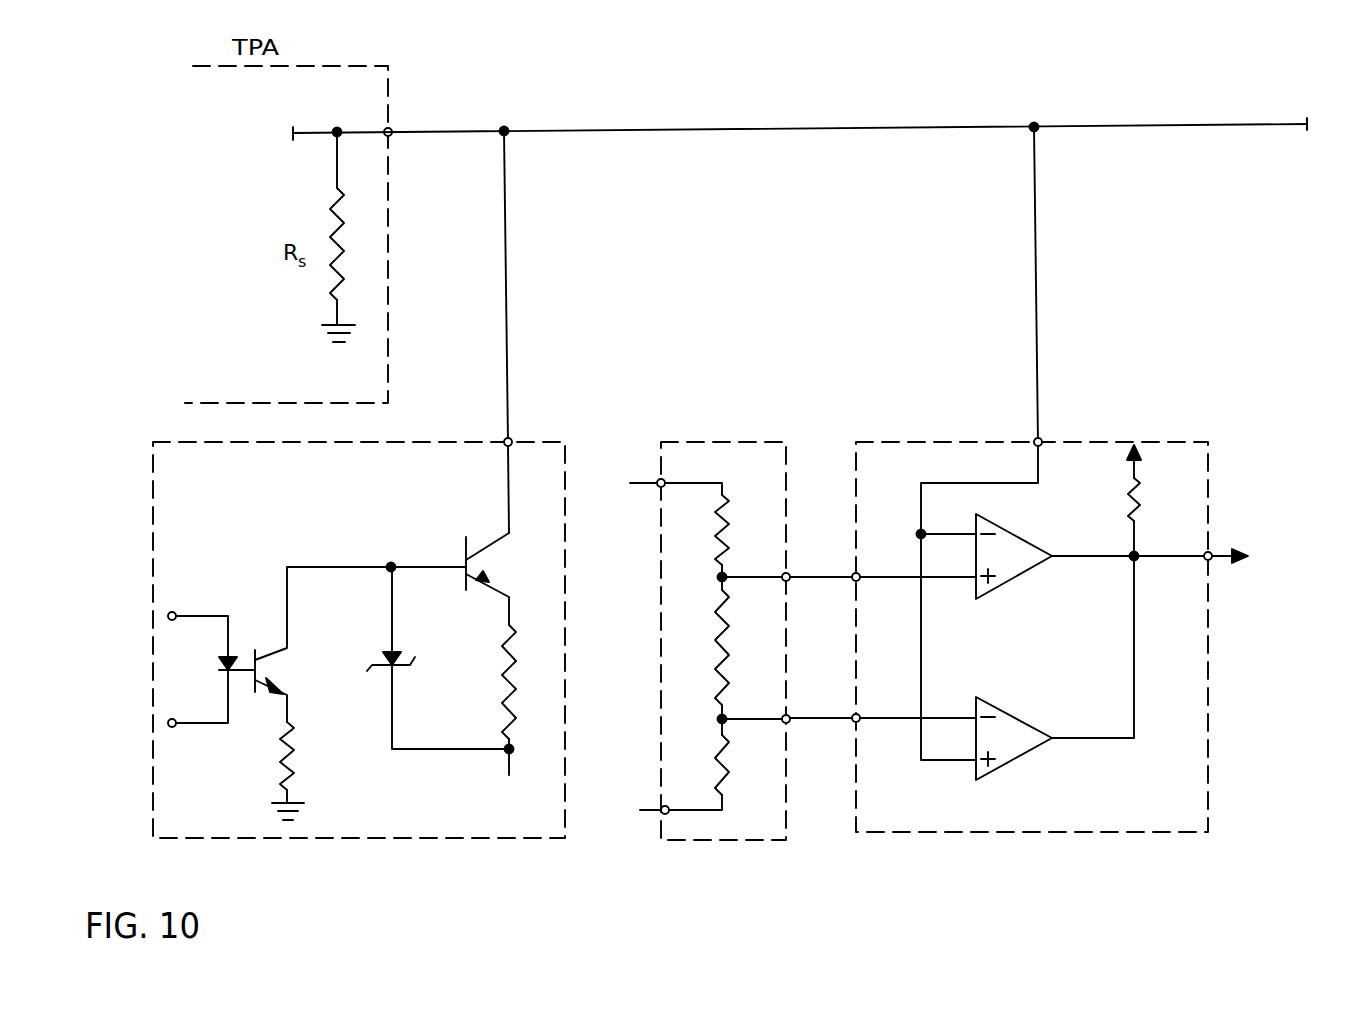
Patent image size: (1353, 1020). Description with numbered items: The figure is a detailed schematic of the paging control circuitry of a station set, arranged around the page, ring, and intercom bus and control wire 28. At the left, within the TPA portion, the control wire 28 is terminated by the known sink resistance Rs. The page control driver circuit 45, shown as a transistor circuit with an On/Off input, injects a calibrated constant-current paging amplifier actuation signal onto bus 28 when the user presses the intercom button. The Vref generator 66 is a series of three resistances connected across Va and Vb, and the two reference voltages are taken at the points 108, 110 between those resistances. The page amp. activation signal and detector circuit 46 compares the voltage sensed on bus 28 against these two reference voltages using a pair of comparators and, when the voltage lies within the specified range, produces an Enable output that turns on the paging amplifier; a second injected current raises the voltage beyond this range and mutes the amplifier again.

The page, ring, and intercom bus and control wire 28 is at (770, 129).
The page control driver circuit 45 is at (359, 655).
The page amp. activation signal and detector circuit 46 is at (1060, 668).
The Vref generator 66 is at (717, 674).
The point 108 is at (718, 574).
The point 110 is at (718, 718).